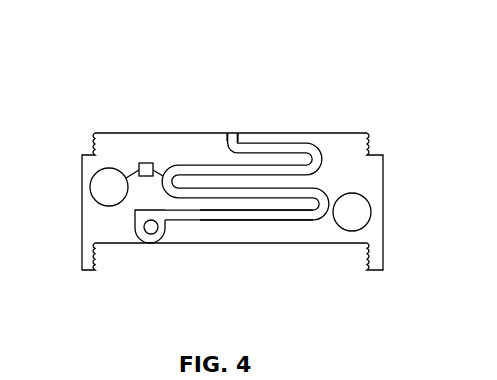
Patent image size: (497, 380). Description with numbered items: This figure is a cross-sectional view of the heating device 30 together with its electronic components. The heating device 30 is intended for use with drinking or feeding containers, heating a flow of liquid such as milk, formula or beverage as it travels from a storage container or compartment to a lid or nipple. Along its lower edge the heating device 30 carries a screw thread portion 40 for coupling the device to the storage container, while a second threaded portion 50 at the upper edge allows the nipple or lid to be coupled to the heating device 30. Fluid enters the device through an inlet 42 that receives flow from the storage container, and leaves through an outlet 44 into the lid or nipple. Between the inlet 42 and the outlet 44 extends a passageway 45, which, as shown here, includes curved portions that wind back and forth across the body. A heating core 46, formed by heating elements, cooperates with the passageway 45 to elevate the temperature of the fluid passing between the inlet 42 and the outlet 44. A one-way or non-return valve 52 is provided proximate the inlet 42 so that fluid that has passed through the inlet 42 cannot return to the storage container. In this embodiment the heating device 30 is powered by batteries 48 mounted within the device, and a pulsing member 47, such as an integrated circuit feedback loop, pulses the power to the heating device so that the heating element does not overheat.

The heating device 30 is at (432, 95).
The screw thread portion 40 is at (363, 257).
The inlet 42 is at (141, 238).
The outlet 44 is at (232, 132).
The passageway 45 is at (243, 221).
The heating core 46 is at (322, 180).
The pulsing member 47 is at (143, 163).
The batteries 48 is at (94, 205).
The second threaded portion 50 is at (338, 132).
The one-way valve 52 is at (158, 233).